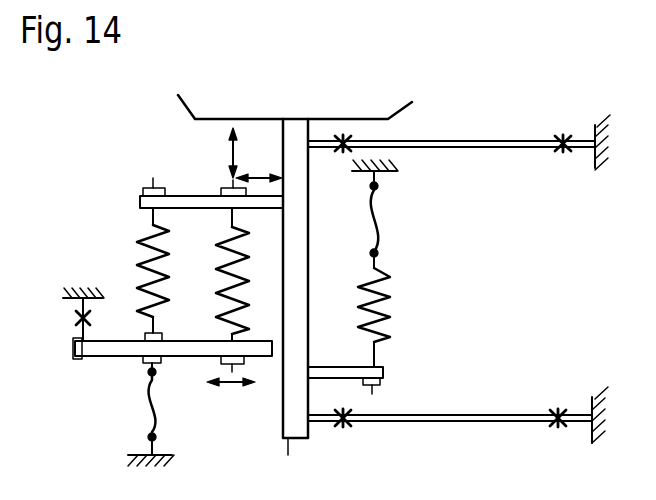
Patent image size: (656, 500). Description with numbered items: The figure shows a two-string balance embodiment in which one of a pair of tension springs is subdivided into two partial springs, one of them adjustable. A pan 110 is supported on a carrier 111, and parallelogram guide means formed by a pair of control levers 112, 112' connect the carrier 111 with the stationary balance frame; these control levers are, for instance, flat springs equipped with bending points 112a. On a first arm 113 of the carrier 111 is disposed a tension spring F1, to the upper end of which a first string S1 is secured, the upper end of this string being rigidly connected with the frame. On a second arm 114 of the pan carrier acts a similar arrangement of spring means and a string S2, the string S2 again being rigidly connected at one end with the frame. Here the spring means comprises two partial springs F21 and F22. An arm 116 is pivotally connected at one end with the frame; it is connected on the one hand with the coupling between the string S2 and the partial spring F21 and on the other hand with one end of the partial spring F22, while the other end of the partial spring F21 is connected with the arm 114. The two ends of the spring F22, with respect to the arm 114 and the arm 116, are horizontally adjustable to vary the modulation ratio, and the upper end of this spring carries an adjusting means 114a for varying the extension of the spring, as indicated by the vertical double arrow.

The pan 110 is at (242, 118).
The carrier 111 is at (288, 303).
The control lever 112 is at (459, 133).
The control lever 112' is at (458, 436).
The bending points 112a is at (343, 135).
The first arm 113 is at (385, 372).
The second arm 114 is at (175, 195).
The adjusting means 114a is at (218, 190).
The arm 116 is at (93, 356).
The tension spring F1 is at (384, 292).
The partial spring F21 is at (139, 258).
The partial spring F22 is at (222, 258).
The first string S1 is at (378, 221).
The string S2 is at (150, 410).